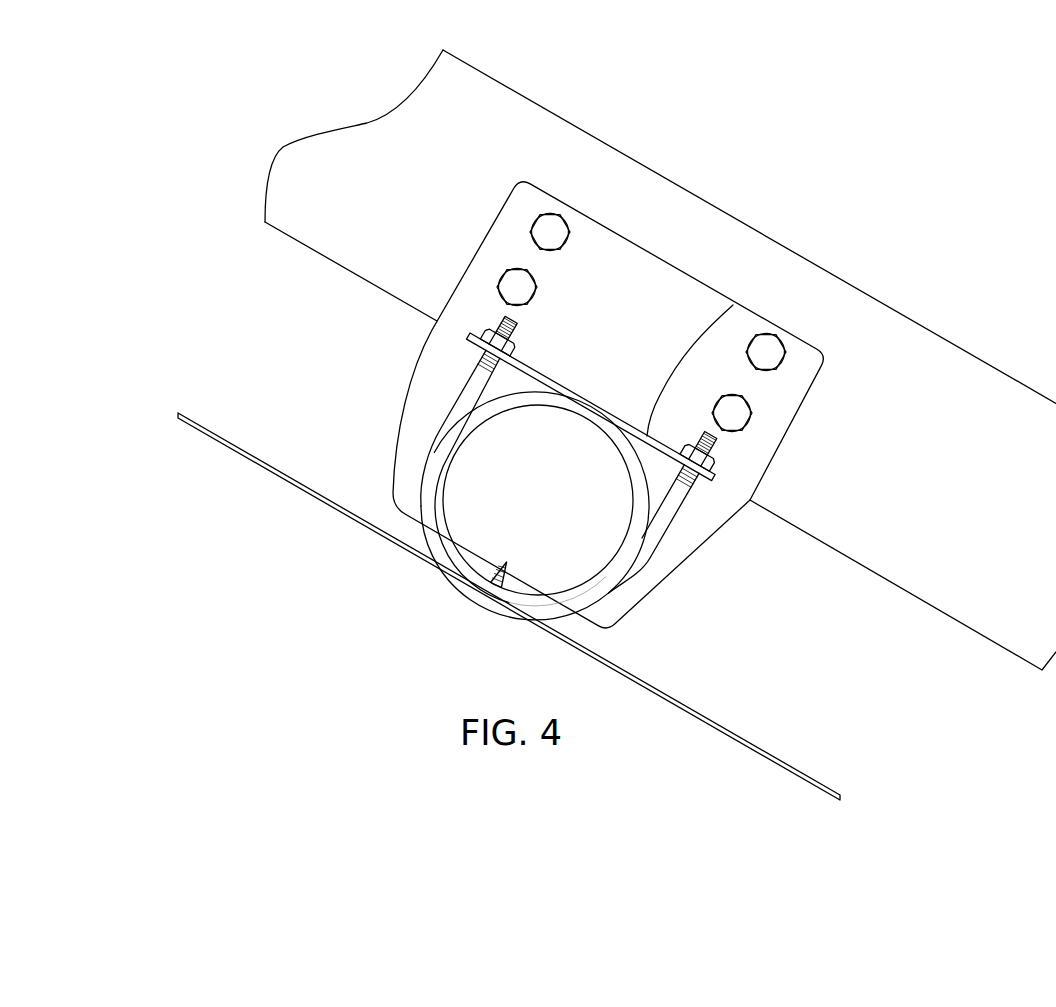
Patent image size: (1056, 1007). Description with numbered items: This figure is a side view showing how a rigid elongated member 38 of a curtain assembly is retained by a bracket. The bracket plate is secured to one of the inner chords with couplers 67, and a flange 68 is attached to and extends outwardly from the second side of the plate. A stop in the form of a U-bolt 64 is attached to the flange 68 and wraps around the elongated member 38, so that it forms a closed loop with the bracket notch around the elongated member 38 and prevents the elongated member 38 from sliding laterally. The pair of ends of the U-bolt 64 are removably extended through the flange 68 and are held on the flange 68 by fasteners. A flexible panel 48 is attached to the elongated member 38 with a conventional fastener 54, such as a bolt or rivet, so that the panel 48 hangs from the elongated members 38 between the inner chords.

The elongated member 38 is at (448, 538).
The flexible panel 48 is at (256, 462).
The fastener 54 is at (476, 592).
The U-bolt 64 is at (653, 535).
The coupler 67 is at (549, 226).
The flange 68 is at (733, 305).